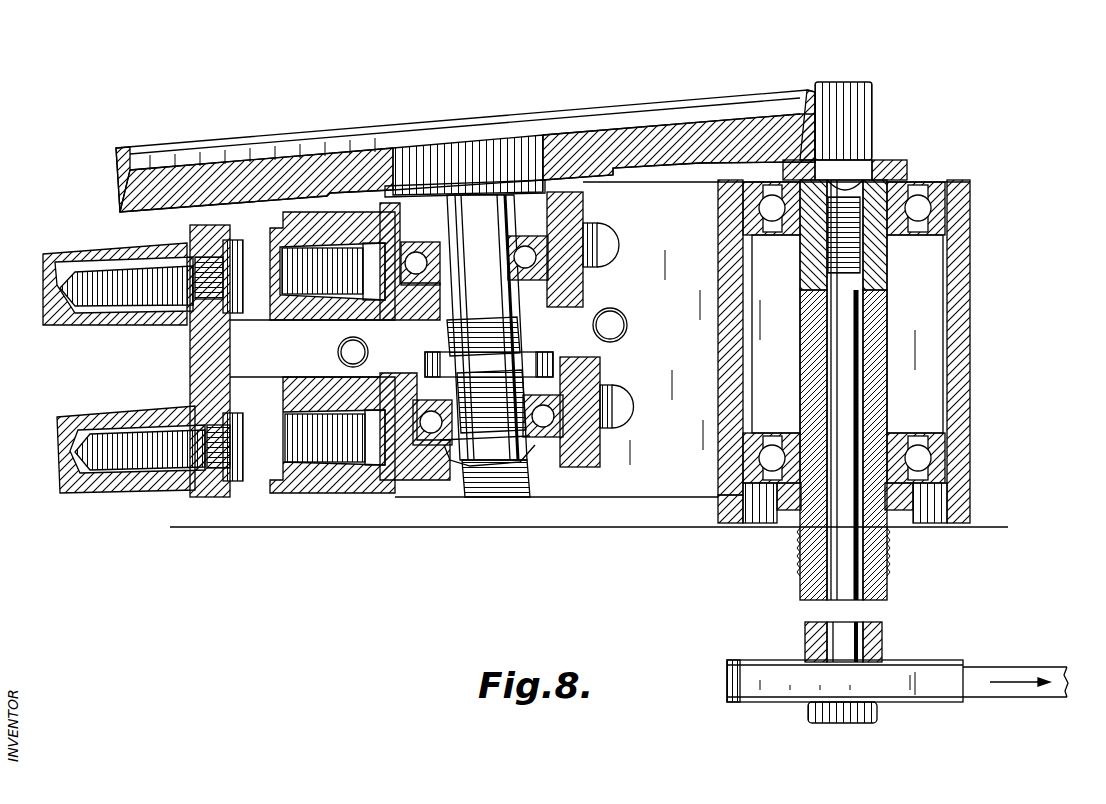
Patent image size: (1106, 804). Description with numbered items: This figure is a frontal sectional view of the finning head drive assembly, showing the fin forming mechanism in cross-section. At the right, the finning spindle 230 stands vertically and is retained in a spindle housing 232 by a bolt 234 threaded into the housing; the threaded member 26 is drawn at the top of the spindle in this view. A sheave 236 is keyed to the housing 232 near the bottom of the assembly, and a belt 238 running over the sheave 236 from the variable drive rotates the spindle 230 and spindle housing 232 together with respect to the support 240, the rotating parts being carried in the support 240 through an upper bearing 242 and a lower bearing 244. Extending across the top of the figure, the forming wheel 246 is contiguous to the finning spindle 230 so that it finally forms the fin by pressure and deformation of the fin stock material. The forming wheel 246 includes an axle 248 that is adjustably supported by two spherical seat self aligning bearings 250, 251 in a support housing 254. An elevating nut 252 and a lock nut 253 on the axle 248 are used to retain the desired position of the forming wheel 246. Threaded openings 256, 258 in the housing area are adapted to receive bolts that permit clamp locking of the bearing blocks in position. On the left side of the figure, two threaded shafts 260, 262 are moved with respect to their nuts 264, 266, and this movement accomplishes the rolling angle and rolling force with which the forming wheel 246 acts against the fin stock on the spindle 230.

The threaded rod 26 is at (832, 78).
The finning spindle 230 is at (875, 118).
The spindle housing 232 is at (878, 332).
The bolt 234 is at (883, 584).
The sheave 236 is at (908, 663).
The belt 238 is at (1023, 690).
The support 240 is at (995, 378).
The bearing 242 is at (948, 212).
The bearing 244 is at (945, 470).
The forming wheel 246 is at (302, 140).
The axle 248 is at (520, 490).
The spherical seat self aligning bearing 250 is at (560, 467).
The spherical seat self aligning bearing 251 is at (565, 236).
The elevating nut 252 is at (537, 352).
The lock nut 253 is at (453, 462).
The support housing 254 is at (585, 290).
The threaded opening 256 is at (622, 312).
The threaded opening 258 is at (338, 355).
The threaded shaft 260 is at (152, 475).
The threaded shaft 262 is at (143, 320).
The nut 264 is at (290, 470).
The nut 266 is at (283, 320).